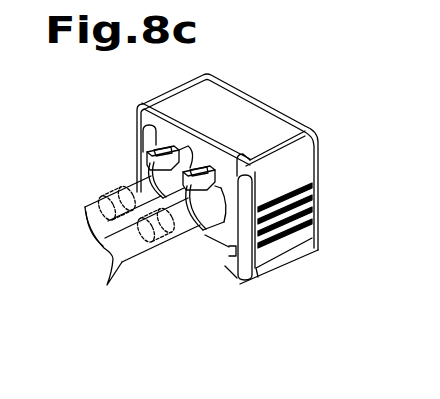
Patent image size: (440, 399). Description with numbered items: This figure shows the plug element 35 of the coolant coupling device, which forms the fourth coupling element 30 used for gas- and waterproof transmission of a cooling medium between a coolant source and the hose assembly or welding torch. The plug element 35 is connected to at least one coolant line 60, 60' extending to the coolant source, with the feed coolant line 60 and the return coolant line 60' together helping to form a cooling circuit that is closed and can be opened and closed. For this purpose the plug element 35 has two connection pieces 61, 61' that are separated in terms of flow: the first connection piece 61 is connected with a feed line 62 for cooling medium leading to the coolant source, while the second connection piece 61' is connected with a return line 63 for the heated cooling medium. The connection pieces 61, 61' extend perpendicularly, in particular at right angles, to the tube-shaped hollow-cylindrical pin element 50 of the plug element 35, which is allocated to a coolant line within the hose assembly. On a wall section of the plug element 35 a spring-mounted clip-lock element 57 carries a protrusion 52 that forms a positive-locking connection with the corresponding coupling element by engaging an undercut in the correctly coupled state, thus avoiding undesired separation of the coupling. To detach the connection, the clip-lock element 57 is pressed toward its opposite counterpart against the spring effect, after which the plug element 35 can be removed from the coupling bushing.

The fourth coupling element 30 is at (296, 103).
The plug element 35 is at (220, 107).
The clip-lock element 57 is at (303, 172).
The protrusion 52 is at (290, 259).
The coolant return line 60' is at (115, 159).
The second connection piece 61' is at (117, 158).
The feed coolant line 60 is at (155, 266).
The first connection piece 61 is at (170, 254).
The feed line 62 is at (131, 254).
The return line 63 is at (88, 226).
The hollow-cylindrical pin element 50 is at (436, 151).